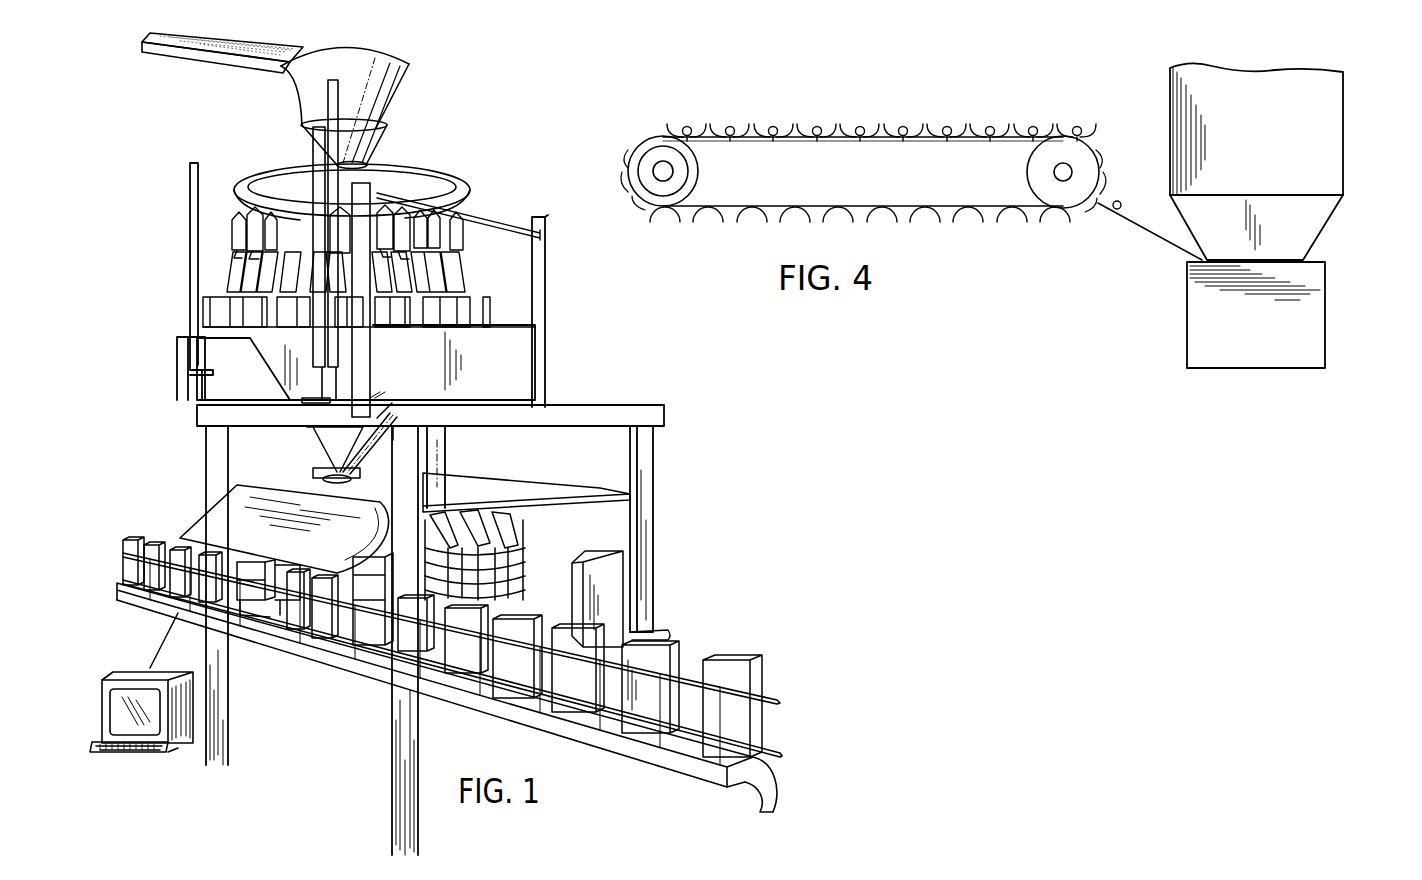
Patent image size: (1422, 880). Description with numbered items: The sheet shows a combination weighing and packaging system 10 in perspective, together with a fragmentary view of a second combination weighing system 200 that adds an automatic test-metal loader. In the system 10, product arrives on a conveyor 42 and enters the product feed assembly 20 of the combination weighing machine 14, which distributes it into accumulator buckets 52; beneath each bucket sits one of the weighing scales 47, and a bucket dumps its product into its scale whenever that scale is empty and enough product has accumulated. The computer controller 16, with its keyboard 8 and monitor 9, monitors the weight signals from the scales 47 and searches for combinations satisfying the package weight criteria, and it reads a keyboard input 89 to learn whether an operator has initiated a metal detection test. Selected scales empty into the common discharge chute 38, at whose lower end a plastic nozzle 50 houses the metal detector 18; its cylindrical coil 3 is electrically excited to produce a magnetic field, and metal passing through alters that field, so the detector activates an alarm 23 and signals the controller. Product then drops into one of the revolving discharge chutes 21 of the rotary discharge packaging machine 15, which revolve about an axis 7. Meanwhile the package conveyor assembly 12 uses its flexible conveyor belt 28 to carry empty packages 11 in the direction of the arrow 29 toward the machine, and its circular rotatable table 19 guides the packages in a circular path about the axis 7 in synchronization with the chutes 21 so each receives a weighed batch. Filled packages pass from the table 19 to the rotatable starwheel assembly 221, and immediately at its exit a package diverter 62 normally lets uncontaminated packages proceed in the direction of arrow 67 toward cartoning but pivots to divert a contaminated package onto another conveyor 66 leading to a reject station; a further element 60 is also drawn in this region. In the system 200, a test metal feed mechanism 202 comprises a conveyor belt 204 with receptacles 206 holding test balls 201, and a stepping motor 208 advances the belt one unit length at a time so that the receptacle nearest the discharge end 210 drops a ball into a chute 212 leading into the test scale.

In FIG. 1, the system 10 is at (513, 172).
In FIG. 1, the conveyor 42 is at (189, 56).
In FIG. 1, the product feed assembly 20 is at (409, 61).
In FIG. 1, the combination weighing machine 14 is at (465, 182).
In FIG. 4, the combination weighing machine 14 is at (1359, 133).
In FIG. 1, the accumulator buckets 52 is at (459, 228).
In FIG. 1, the weighing scales 47 is at (463, 305).
In FIG. 4, the weighing scales 47 is at (1325, 306).
In FIG. 1, the discharge chute 38 is at (378, 417).
In FIG. 1, the cylindrical coil 3 is at (352, 480).
In FIG. 1, the metal detector 18 is at (317, 458).
In FIG. 1, the alarm 23 is at (318, 474).
In FIG. 1, the nozzle 50 is at (336, 477).
In FIG. 1, the axis 7 is at (438, 459).
In FIG. 1, the rotary discharge packaging machine 15 is at (526, 524).
In FIG. 1, the discharge chutes 21 is at (522, 543).
In FIG. 1, the table 19 is at (518, 598).
In FIG. 1, the package conveyor assembly 12 is at (153, 601).
In FIG. 1, the conveyor belt 28 is at (207, 613).
In FIG. 1, the arrow 29 is at (126, 563).
In FIG. 1, the packages 11 is at (167, 545).
In FIG. 1, the open container 60 is at (302, 633).
In FIG. 1, the starwheel assembly 221 is at (325, 628).
In FIG. 1, the package diverter 62 is at (376, 643).
In FIG. 1, the computer controller 16 is at (140, 678).
In FIG. 1, the monitor 9 is at (160, 682).
In FIG. 1, the keyboard 8 is at (128, 750).
In FIG. 1, the keyboard input 89 is at (168, 748).
In FIG. 1, the conveyor 66 is at (660, 634).
In FIG. 1, the arrow 67 is at (767, 727).
In FIG. 4, the combination weighing system 200 is at (1092, 100).
In FIG. 4, the conveyor belt 204 is at (840, 140).
In FIG. 4, the stepping motor 208 is at (662, 178).
In FIG. 4, the discharge end 210 is at (1108, 165).
In FIG. 4, the test metal feed mechanism 202 is at (842, 121).
In FIG. 4, the receptacles 206 is at (922, 140).
In FIG. 4, the test balls 201 is at (1040, 130).
In FIG. 4, the chute 212 is at (1138, 225).